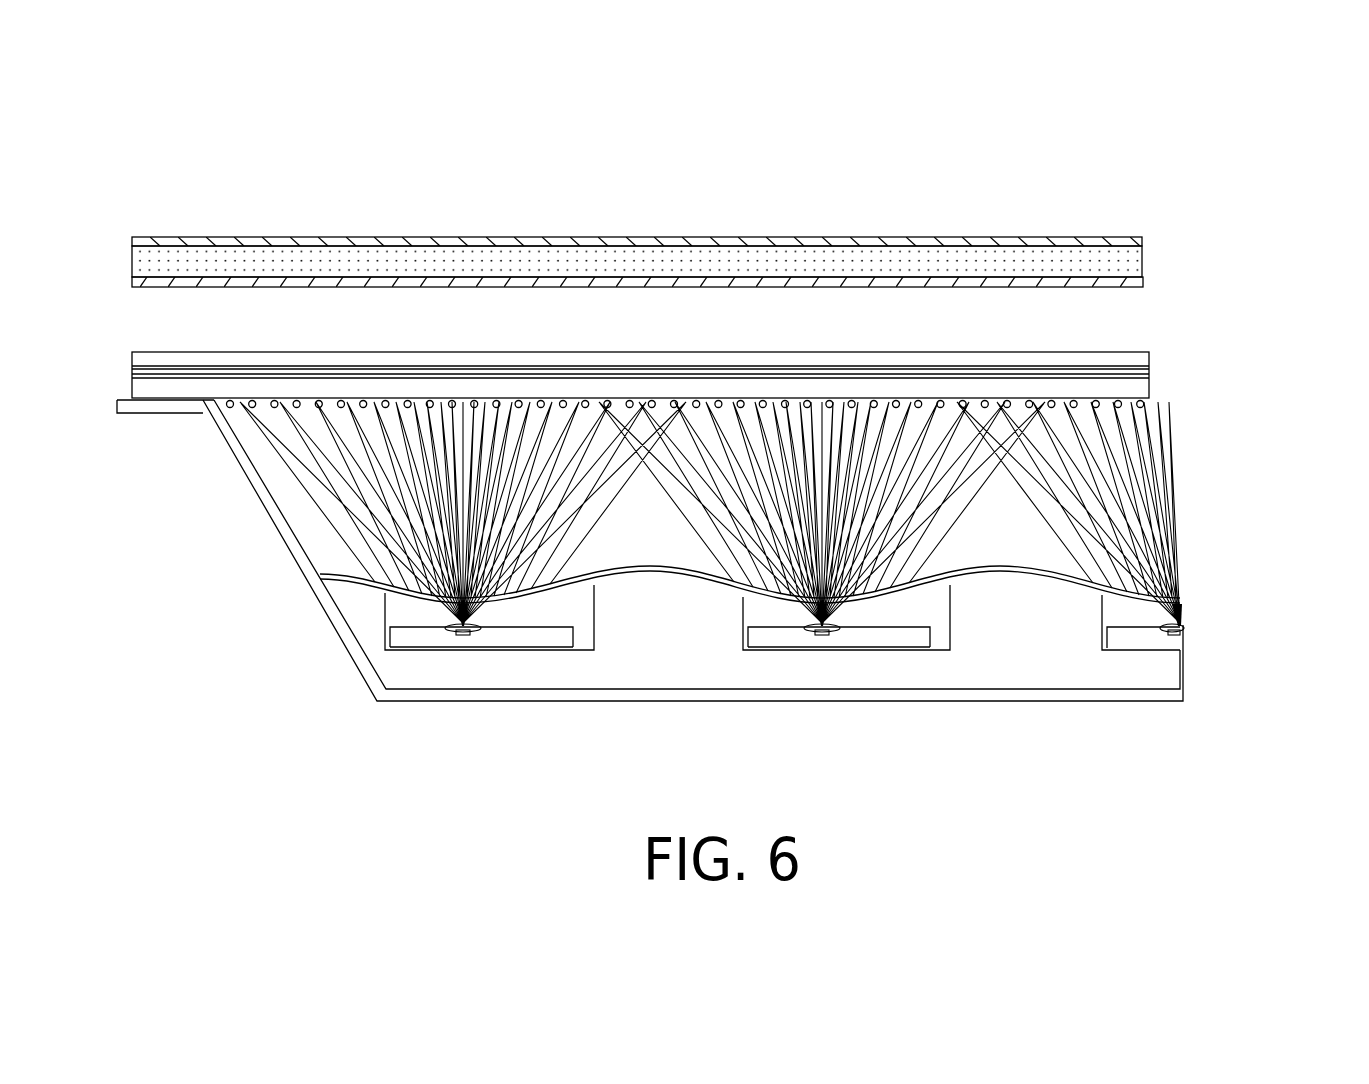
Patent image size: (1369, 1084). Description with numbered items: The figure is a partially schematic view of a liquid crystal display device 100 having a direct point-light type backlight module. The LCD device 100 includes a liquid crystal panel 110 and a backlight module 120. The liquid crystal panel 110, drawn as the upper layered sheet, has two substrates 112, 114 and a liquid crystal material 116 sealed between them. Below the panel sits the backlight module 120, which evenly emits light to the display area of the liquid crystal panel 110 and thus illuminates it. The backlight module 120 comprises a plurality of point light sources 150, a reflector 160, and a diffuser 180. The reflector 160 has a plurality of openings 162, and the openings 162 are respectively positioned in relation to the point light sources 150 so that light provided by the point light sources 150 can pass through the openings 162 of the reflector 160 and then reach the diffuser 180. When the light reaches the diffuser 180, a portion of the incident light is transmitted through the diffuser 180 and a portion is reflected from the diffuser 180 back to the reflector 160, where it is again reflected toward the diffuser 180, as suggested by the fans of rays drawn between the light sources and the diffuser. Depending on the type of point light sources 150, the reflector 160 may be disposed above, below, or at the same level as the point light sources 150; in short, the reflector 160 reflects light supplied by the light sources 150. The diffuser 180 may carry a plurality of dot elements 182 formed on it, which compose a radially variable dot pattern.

The liquid crystal display device 100 is at (141, 134).
The liquid crystal panel 110 is at (688, 258).
The substrate 112 is at (828, 241).
The substrate 114 is at (777, 286).
The liquid crystal material 116 is at (697, 258).
The backlight module 120 is at (735, 569).
The point light sources 150 is at (826, 632).
The reflector 160 is at (985, 586).
The openings 162 is at (745, 598).
The diffuser 180 is at (1135, 385).
The dot elements 182 is at (215, 403).